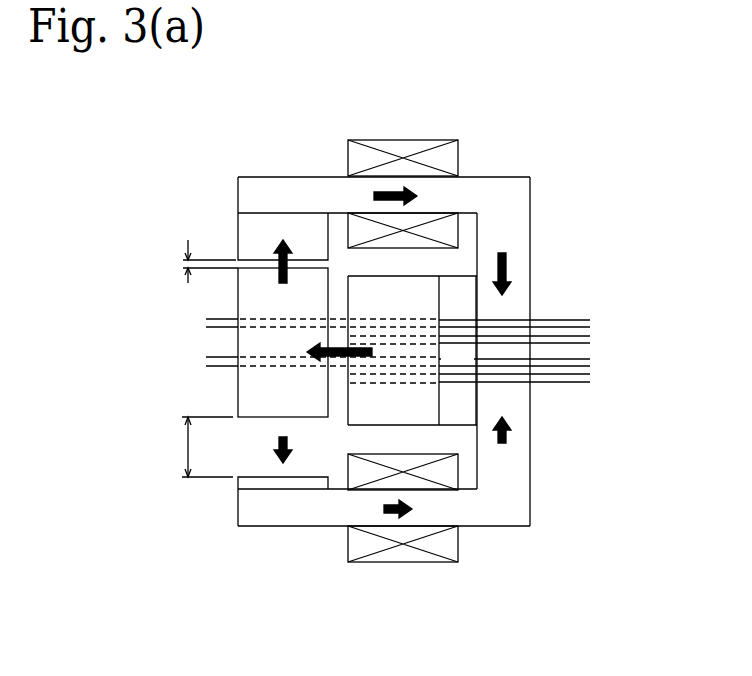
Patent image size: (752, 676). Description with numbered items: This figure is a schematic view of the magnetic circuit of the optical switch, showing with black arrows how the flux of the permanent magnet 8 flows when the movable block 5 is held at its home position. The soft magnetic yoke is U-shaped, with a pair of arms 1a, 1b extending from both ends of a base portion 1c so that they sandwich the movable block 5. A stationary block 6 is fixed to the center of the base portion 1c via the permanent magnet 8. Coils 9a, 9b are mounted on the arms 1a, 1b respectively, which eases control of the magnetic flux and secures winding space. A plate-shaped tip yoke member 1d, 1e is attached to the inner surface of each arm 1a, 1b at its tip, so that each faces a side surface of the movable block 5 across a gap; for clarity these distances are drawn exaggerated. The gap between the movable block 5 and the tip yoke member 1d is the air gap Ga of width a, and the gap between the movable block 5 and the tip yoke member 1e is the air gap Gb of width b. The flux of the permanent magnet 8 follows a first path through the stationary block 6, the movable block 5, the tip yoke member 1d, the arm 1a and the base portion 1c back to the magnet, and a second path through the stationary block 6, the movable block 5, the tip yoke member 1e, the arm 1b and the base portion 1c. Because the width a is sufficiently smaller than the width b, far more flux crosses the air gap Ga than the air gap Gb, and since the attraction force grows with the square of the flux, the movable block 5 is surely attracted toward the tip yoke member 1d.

The arm 1a is at (284, 190).
The arm 1b is at (310, 508).
The base portion 1c is at (516, 237).
The tip yoke member 1d is at (252, 230).
The tip yoke member 1e is at (272, 482).
The movable block 5 is at (252, 300).
The stationary block 6 is at (410, 405).
The permanent magnet 8 is at (460, 403).
The coil 9a is at (410, 147).
The coil 9b is at (402, 553).
The air gap Ga is at (237, 262).
The air gap Gb is at (255, 446).
The width of air gap Ga a is at (202, 261).
The width of air gap Gb b is at (202, 447).